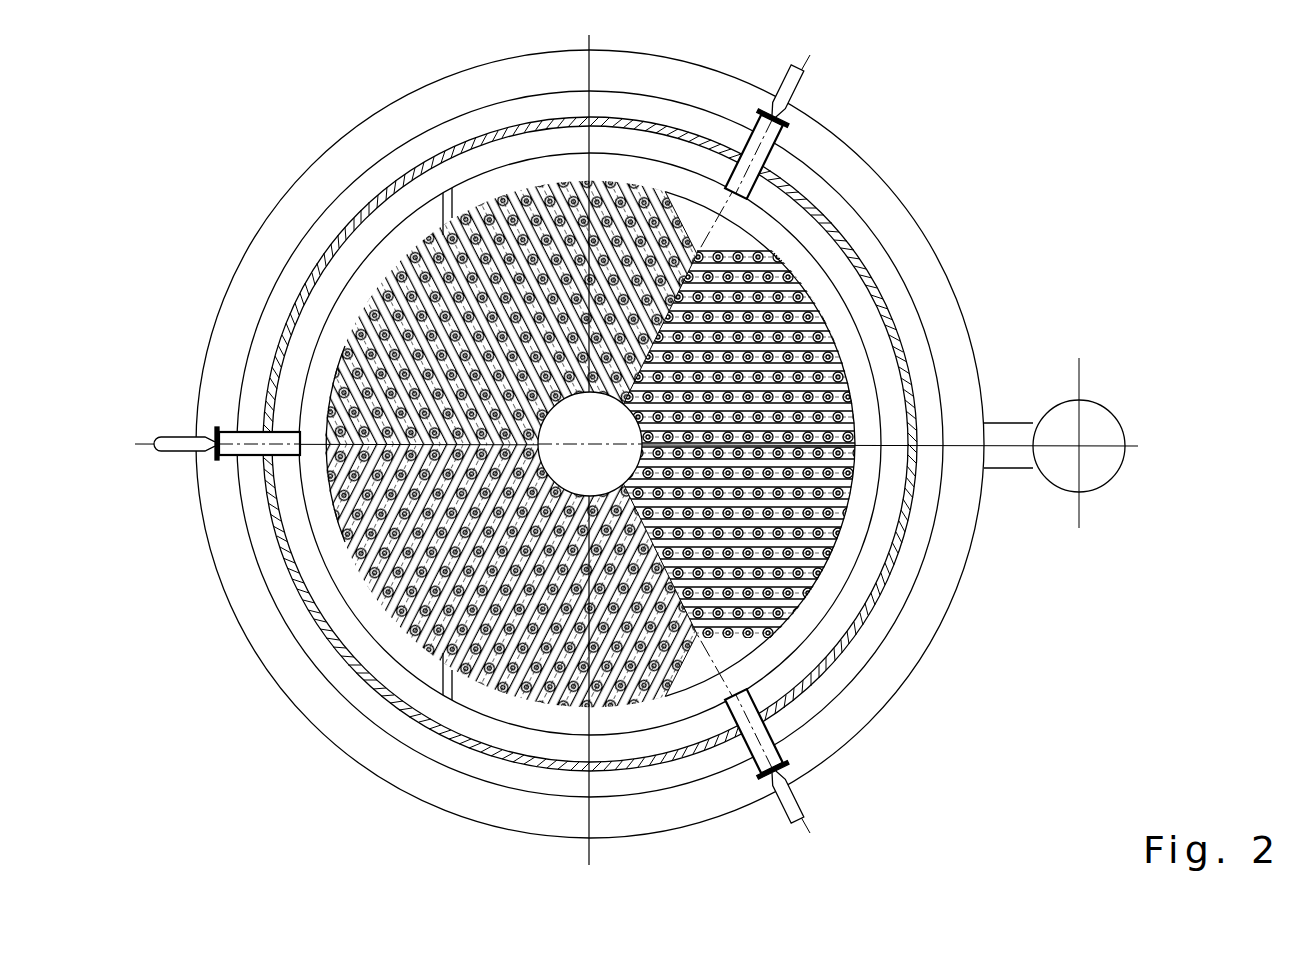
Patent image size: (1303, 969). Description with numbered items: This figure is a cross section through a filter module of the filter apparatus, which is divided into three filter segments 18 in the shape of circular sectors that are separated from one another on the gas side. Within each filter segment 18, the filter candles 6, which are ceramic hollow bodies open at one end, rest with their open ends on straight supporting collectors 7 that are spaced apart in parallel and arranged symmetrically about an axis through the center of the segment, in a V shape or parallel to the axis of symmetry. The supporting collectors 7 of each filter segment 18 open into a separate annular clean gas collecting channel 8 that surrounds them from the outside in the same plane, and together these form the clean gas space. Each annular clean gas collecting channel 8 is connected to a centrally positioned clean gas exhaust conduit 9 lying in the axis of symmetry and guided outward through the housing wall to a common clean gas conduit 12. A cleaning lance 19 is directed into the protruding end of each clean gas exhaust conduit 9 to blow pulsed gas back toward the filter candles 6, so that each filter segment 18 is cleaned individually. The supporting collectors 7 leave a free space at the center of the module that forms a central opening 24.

The filter candle 6 is at (815, 405).
The supporting collector 7 is at (353, 330).
The clean gas collecting channel 8 is at (787, 248).
The clean gas exhaust conduit 9 is at (237, 448).
The clean gas conduit 12 is at (1093, 425).
The filter segment 18 is at (785, 208).
The cleaning lance 19 is at (185, 441).
The central opening 24 is at (590, 444).